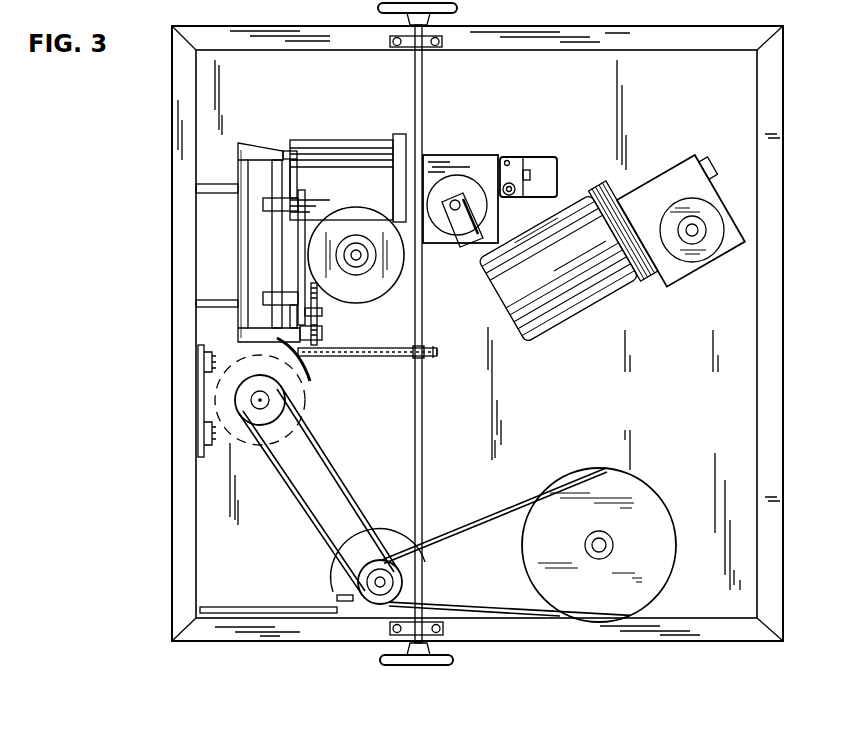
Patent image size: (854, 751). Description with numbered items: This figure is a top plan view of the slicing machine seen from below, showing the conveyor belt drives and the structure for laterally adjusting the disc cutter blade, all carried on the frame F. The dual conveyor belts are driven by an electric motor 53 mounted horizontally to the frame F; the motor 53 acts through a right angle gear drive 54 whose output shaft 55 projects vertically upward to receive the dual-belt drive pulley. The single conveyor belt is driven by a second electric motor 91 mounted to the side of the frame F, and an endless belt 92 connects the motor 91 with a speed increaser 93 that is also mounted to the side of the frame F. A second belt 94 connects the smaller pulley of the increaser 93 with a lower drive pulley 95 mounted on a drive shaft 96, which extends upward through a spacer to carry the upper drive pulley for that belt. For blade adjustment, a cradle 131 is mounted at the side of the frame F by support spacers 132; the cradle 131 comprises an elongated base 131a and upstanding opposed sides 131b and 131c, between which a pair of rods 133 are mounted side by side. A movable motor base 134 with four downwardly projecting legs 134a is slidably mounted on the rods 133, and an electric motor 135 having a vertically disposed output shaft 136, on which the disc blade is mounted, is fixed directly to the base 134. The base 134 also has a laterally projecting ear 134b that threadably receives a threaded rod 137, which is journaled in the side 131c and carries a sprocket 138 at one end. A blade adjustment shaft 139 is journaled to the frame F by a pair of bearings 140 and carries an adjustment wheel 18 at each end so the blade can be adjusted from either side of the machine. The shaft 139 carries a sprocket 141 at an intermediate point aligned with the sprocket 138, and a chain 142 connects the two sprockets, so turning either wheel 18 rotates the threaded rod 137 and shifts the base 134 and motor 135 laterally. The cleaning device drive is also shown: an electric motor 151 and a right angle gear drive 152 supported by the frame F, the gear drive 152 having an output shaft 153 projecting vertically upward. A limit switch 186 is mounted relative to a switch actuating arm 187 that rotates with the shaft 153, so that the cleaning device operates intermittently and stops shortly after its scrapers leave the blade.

The frame F is at (183, 326).
The adjustment wheel 18 is at (457, 8).
The electric motor 53 is at (598, 292).
The right angle gear drive 54 is at (686, 252).
The output shaft 55 is at (690, 226).
The electric motor 91 is at (215, 401).
The endless belt 92 is at (323, 470).
The speed increaser 93 is at (372, 598).
The second belt 94 is at (488, 508).
The lower drive pulley 95 is at (646, 511).
The drive shaft 96 is at (598, 552).
The cradle 131 is at (236, 158).
The elongated base 131a is at (243, 239).
The upstanding side 131b is at (268, 142).
The upstanding side 131c is at (316, 367).
The support spacers 132 is at (200, 192).
The rods 133 is at (272, 222).
The movable motor base 134 is at (302, 186).
The downwardly projecting legs 134a is at (292, 205).
The laterally projecting ear 134b is at (319, 312).
The electric motor 135 is at (390, 283).
The output shaft 136 is at (362, 256).
The threaded rod 137 is at (320, 289).
The sprocket 138 is at (335, 356).
The blade adjustment shaft 139 is at (423, 97).
The bearings 140 is at (428, 47).
The sprocket 141 is at (426, 358).
The chain 142 is at (386, 358).
The electric motor 151 is at (354, 147).
The right angle gear drive 152 is at (487, 155).
The output shaft 153 is at (456, 200).
The limit switch 186 is at (548, 158).
The switch actuating arm 187 is at (440, 240).